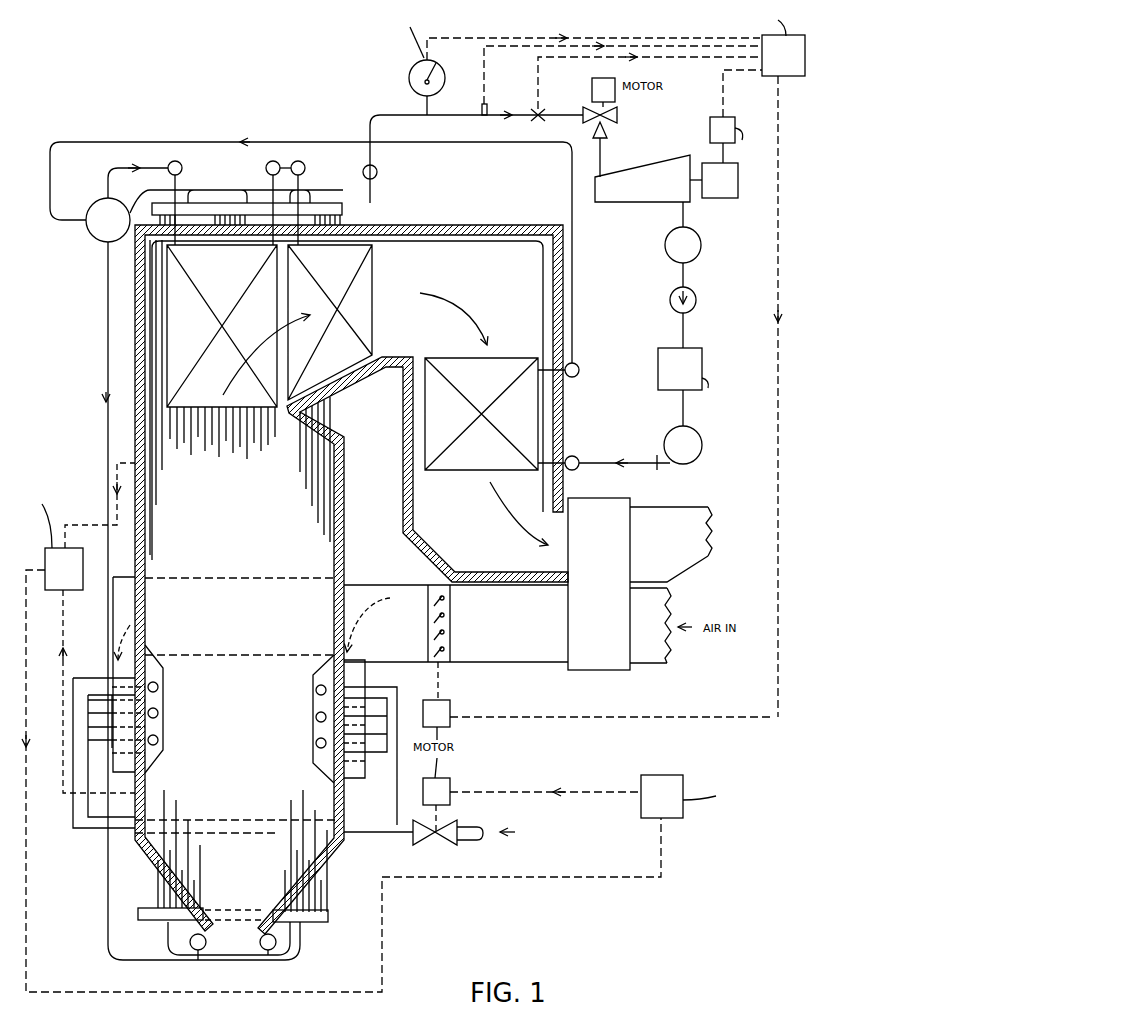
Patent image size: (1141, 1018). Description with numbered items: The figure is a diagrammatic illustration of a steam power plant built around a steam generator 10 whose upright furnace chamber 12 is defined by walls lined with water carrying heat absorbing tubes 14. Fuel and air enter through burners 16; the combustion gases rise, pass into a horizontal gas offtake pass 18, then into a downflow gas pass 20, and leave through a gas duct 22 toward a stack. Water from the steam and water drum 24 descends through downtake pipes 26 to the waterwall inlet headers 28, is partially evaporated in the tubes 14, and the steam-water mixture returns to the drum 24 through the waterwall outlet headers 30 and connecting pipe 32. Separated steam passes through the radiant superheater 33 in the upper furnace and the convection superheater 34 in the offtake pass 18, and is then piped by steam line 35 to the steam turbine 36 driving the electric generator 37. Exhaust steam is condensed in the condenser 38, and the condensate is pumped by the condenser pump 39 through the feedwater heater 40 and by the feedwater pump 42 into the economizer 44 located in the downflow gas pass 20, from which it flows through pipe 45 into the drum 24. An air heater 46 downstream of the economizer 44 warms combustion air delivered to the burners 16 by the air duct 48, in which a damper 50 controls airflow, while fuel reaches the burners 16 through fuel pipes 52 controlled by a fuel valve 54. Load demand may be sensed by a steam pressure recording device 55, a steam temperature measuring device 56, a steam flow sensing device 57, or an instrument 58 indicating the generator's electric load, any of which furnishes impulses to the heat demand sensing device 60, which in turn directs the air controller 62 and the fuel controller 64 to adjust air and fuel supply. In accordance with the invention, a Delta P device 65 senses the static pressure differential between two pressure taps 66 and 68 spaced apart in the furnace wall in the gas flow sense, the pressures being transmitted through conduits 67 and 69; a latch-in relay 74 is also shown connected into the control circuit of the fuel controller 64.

The steam generator 10 is at (86, 320).
The furnace chamber 12 is at (248, 632).
The heat absorbing tubes 14 is at (148, 563).
The burners 16 is at (160, 740).
The horizontal gas offtake pass 18 is at (453, 307).
The downflow gas pass 20 is at (502, 513).
The gas duct 22 is at (671, 544).
The steam and water drum 24 is at (100, 236).
The downtake pipes 26 is at (107, 372).
The waterwall inlet headers 28 is at (262, 950).
The waterwall outlet headers 30 is at (330, 203).
The connecting pipe 32 is at (247, 190).
The radiant superheater 33 is at (222, 326).
The convection superheater 34 is at (330, 322).
The steam line 35 is at (387, 113).
The steam turbine 36 is at (655, 195).
The electric generator 37 is at (722, 200).
The condenser 38 is at (668, 250).
The condenser pump 39 is at (697, 298).
The feedwater heater 40 is at (702, 372).
The feedwater pump 42 is at (703, 445).
The economizer 44 is at (481, 414).
The pipe 45 is at (50, 200).
The air heater 46 is at (599, 584).
The air duct 48 is at (400, 582).
The damper 50 is at (450, 630).
The fuel pipes 52 is at (75, 813).
The fuel valve 54 is at (440, 842).
The steam pressure recording device 55 is at (413, 72).
The steam temperature measuring device 56 is at (484, 118).
The steam flow sensing device 57 is at (538, 121).
The instrument 58 is at (710, 129).
The heat demand sensing device 60 is at (728, 358).
The air controller 62 is at (450, 707).
The fuel controller 64 is at (450, 786).
The Delta P device 65 is at (55, 531).
The pressure tap 66 is at (185, 505).
The conduit 67 is at (120, 463).
The pressure tap 68 is at (150, 796).
The conduit 69 is at (62, 720).
The latch-in relay 74 is at (705, 796).